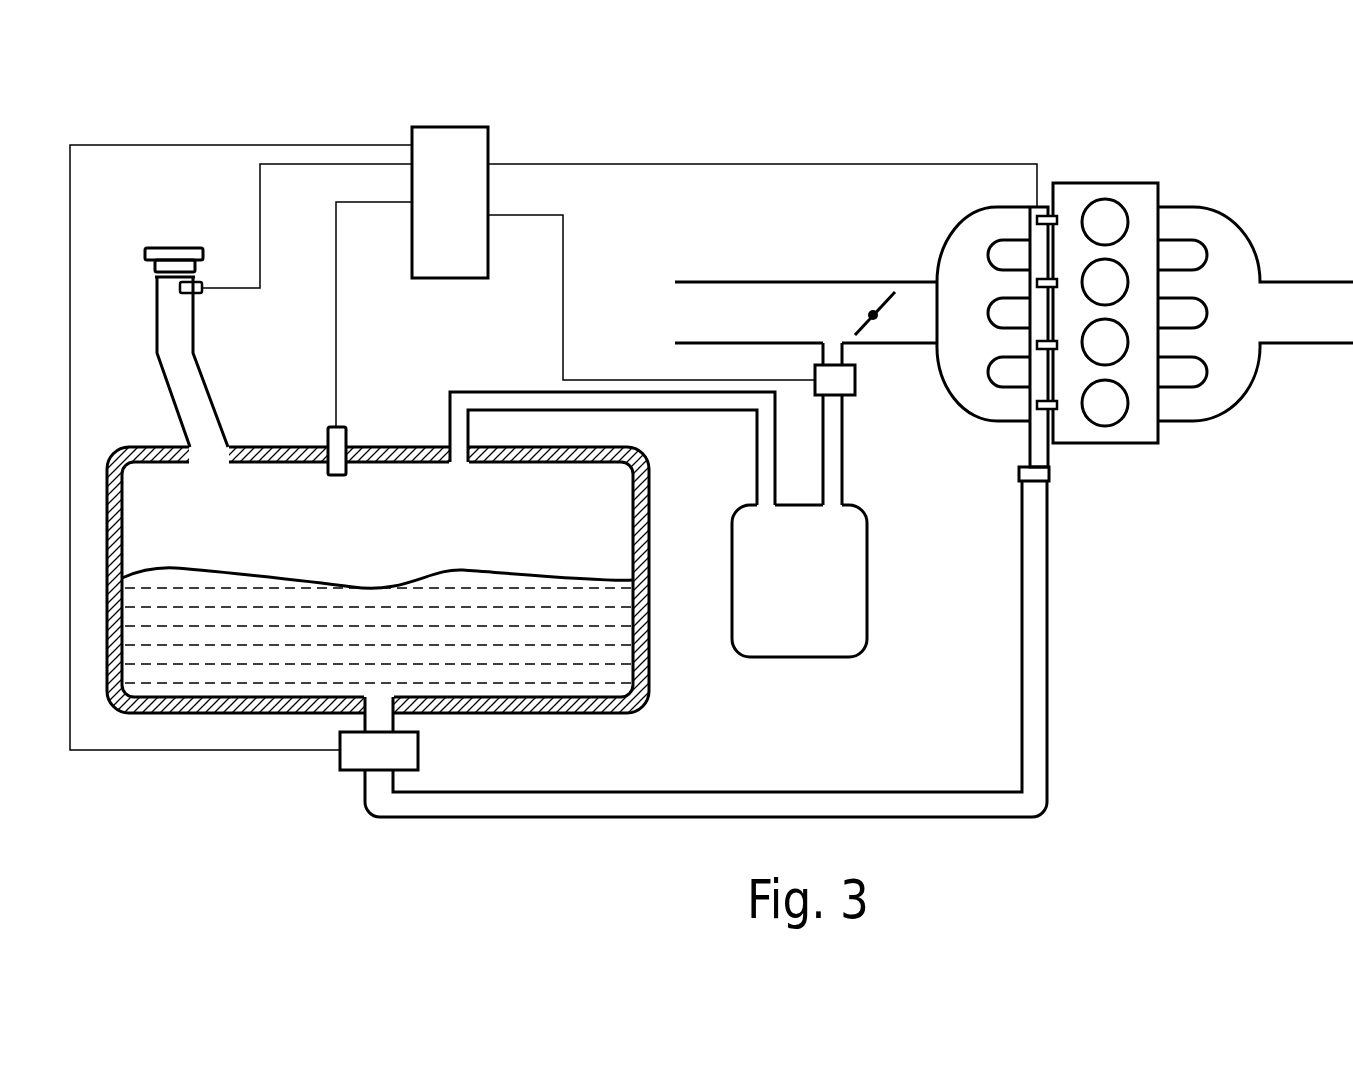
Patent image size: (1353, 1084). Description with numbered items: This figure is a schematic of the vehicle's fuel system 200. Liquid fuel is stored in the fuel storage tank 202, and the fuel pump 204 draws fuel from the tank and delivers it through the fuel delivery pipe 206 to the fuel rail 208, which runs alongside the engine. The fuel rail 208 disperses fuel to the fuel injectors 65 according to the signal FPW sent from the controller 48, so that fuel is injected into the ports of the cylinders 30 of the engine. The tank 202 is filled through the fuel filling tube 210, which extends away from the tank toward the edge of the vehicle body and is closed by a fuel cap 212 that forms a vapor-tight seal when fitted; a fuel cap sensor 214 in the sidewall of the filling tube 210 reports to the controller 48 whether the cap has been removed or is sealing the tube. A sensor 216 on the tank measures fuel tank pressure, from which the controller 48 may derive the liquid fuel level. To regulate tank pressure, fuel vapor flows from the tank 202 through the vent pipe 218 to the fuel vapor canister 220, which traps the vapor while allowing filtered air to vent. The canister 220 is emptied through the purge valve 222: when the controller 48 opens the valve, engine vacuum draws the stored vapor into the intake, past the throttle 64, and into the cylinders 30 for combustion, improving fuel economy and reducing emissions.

The cylinder 30 is at (1119, 232).
The controller 48 is at (450, 126).
The throttle 64 is at (872, 310).
The fuel injectors 65 is at (1038, 207).
The signal FPW is at (715, 165).
The fuel system 200 is at (1215, 626).
The fuel storage tank 202 is at (650, 513).
The fuel pump 204 is at (418, 753).
The fuel delivery pipe 206 is at (710, 792).
The fuel rail 208 is at (1028, 433).
The fuel filling tube 210 is at (160, 380).
The fuel cap 212 is at (165, 248).
The fuel cap sensor 214 is at (205, 293).
The sensor 216 is at (347, 433).
The vent pipe 218 is at (527, 392).
The fuel vapor canister 220 is at (867, 575).
The purge valve 222 is at (857, 383).